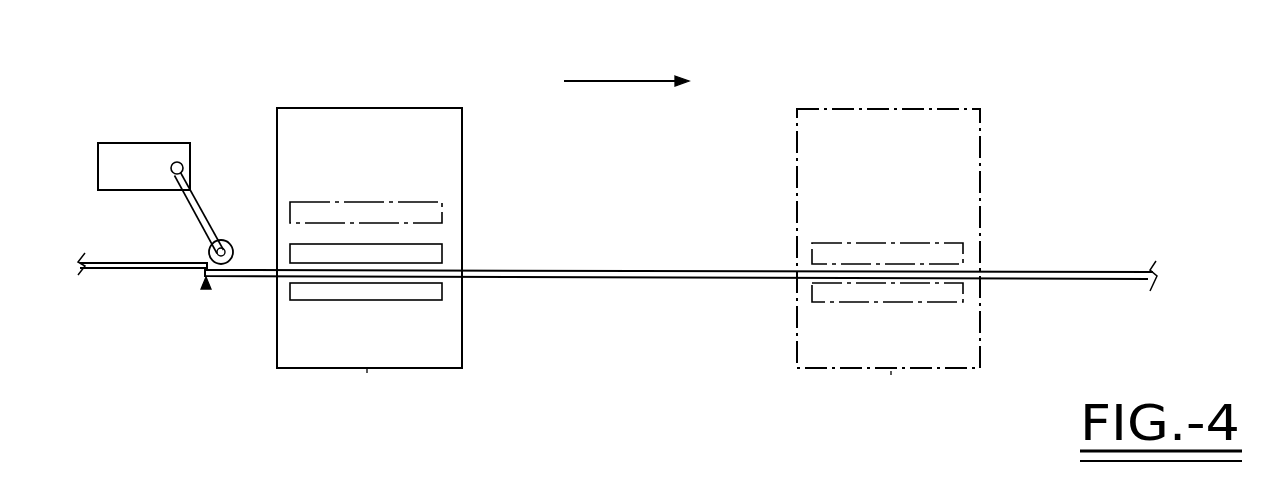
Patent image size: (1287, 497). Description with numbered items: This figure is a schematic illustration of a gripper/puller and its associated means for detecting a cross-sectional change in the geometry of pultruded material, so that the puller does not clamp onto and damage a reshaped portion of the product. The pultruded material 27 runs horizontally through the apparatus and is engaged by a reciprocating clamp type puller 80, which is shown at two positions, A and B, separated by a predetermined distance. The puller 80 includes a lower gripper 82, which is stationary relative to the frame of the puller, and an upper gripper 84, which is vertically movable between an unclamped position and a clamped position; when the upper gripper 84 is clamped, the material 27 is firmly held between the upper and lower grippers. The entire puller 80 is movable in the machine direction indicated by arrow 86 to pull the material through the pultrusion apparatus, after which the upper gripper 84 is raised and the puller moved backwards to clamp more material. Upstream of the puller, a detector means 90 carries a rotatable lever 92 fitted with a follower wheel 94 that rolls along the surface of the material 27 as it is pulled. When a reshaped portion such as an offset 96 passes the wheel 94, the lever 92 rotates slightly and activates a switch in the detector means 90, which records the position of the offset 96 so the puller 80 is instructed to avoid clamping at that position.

The material 27 is at (97, 269).
The reciprocating clamp type puller 80 is at (360, 108).
The lower gripper 82 is at (437, 290).
The upper gripper 84 is at (437, 254).
The arrow 86 is at (618, 81).
The detector means 90 is at (128, 143).
The rotatable lever 92 is at (197, 214).
The follower wheel 94 is at (232, 243).
The offset 96 is at (207, 288).